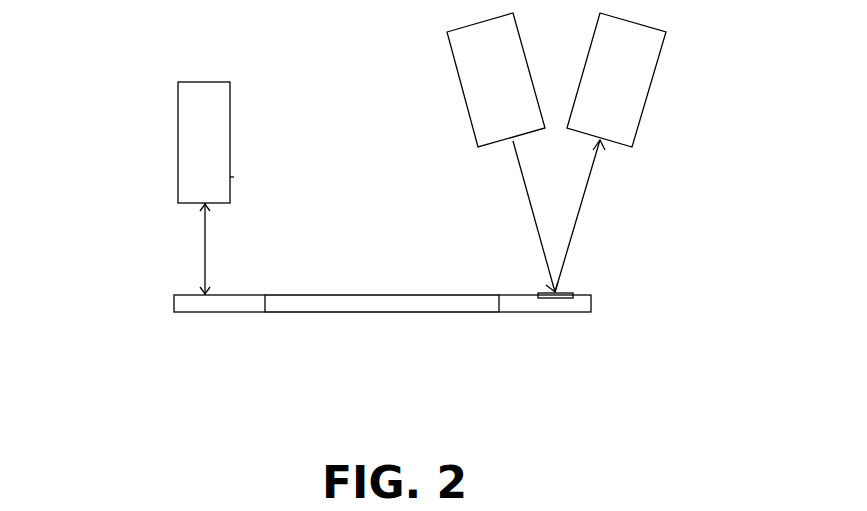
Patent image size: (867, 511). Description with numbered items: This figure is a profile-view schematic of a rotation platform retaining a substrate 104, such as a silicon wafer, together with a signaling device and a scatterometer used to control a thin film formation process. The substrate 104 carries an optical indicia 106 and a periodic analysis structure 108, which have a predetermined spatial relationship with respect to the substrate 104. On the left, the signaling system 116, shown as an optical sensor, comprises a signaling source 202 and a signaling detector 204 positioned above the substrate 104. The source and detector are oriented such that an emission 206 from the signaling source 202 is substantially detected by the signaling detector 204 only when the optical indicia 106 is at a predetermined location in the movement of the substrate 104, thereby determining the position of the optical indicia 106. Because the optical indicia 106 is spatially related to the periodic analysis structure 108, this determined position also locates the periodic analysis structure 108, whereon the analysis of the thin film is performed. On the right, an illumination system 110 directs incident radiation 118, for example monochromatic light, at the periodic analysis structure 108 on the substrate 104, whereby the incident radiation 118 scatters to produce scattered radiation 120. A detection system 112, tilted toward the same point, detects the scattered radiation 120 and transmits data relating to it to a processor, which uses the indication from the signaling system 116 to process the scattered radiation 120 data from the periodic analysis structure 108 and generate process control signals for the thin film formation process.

The signaling system 116 is at (157, 73).
The signaling source 202 is at (178, 147).
The signaling detector 204 is at (230, 177).
The emission 206 is at (205, 258).
The optical indicia 106 is at (202, 293).
The substrate 104 is at (591, 298).
The periodic analysis structure 108 is at (574, 292).
The illumination system 110 is at (467, 108).
The detection system 112 is at (647, 108).
The incident radiation 118 is at (527, 196).
The scattered radiation 120 is at (587, 185).